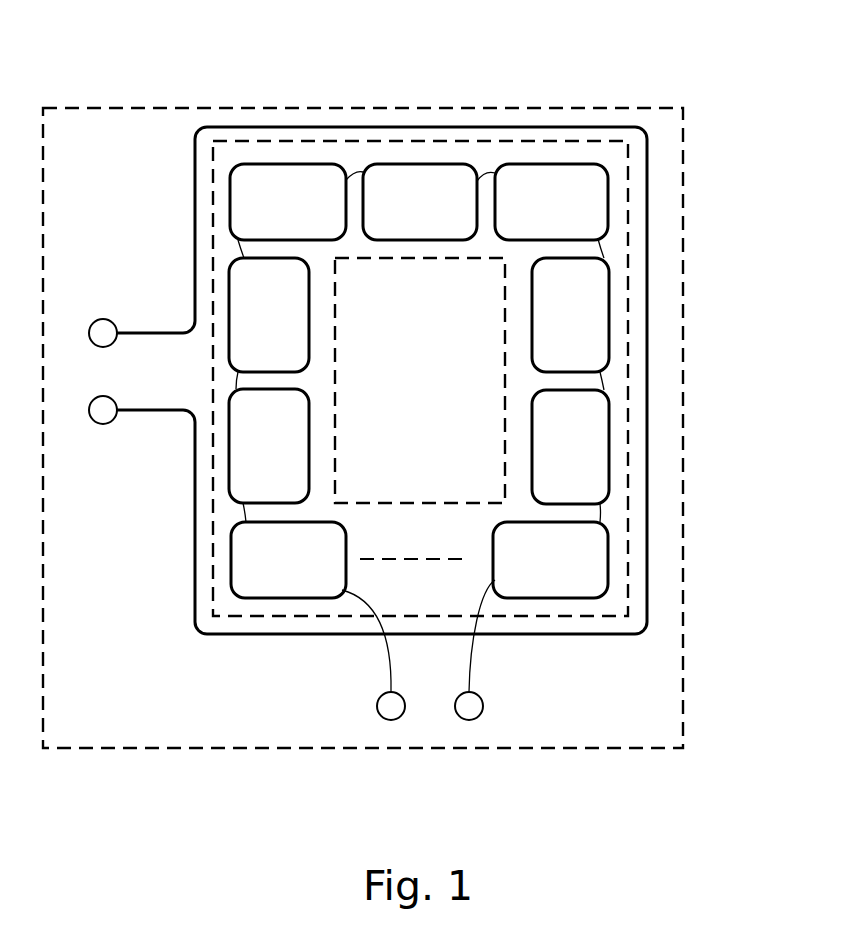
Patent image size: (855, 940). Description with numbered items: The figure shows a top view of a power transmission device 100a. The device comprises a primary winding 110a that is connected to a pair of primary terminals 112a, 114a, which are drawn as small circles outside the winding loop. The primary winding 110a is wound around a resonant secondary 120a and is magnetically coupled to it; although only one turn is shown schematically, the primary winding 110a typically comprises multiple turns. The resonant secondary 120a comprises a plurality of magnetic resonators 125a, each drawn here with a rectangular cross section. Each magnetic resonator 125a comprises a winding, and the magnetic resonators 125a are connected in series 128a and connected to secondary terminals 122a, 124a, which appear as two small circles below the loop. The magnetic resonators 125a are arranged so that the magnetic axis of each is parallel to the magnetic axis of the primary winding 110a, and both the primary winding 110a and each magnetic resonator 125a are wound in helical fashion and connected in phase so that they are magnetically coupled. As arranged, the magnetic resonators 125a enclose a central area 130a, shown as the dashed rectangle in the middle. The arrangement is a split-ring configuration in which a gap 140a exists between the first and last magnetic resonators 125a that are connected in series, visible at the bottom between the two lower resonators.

The power transmission device 100a is at (176, 107).
The primary winding 110a is at (194, 224).
The primary terminal 112a is at (104, 320).
The primary terminal 114a is at (105, 425).
The resonant secondary 120a is at (212, 598).
The secondary terminal 122a is at (377, 707).
The secondary terminal 124a is at (484, 706).
The magnetic resonator 125a is at (419, 381).
The series connection 128a is at (600, 513).
The central area 130a is at (420, 380).
The gap 140a is at (458, 563).